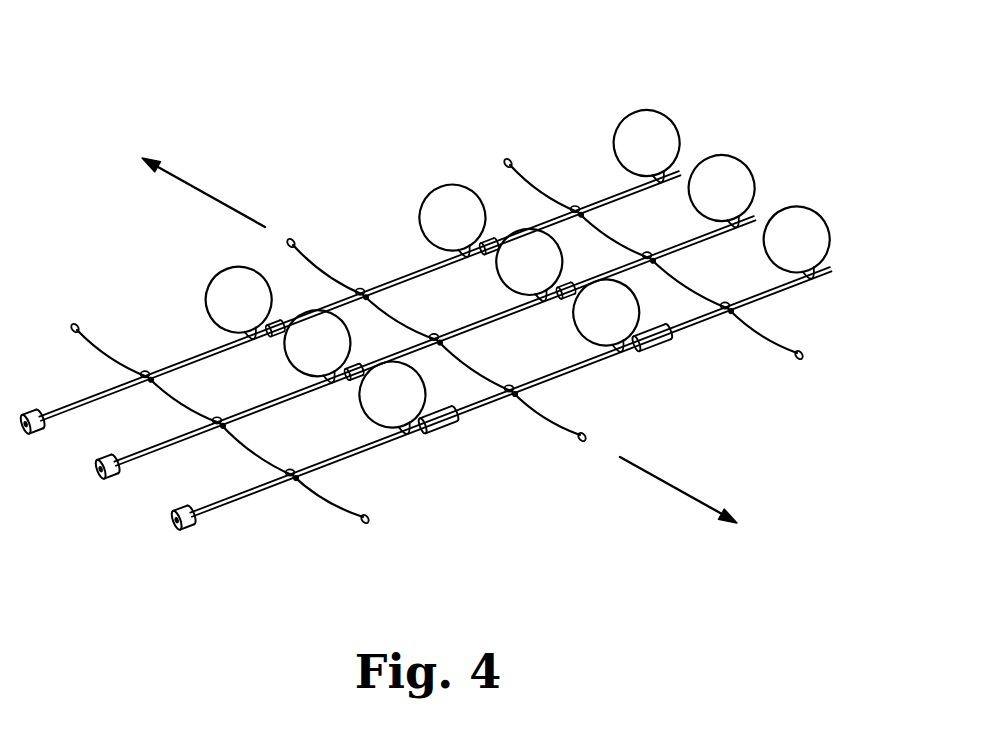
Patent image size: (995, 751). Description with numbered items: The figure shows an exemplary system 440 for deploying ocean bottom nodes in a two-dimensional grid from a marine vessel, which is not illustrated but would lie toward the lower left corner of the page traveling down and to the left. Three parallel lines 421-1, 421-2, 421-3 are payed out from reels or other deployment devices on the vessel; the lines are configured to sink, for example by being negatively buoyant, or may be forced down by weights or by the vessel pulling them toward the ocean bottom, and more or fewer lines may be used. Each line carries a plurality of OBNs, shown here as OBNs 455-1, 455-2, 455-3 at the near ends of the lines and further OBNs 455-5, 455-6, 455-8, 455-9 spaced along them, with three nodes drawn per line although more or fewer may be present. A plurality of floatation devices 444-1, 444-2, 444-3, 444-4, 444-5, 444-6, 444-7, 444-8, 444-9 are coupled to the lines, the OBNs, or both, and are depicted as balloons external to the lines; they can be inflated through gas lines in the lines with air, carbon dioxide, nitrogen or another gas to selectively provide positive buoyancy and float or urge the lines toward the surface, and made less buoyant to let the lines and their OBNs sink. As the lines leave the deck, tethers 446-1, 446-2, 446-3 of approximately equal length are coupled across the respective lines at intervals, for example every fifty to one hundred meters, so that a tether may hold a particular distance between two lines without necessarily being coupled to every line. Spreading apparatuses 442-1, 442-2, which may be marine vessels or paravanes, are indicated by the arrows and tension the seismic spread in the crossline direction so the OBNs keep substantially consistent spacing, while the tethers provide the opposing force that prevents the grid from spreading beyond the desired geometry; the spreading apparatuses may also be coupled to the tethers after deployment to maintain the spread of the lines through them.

The system 440 is at (539, 91).
The spreading apparatus 442-1 is at (220, 200).
The spreading apparatus 442-2 is at (672, 486).
The line 421-1 is at (197, 356).
The line 421-2 is at (272, 406).
The line 421-3 is at (330, 466).
The floatation device 444-1 is at (208, 303).
The floatation device 444-2 is at (290, 359).
The floatation device 444-3 is at (364, 411).
The floatation device 444-4 is at (421, 231).
The floatation device 444-5 is at (498, 280).
The floatation device 444-6 is at (576, 329).
The floatation device 444-7 is at (670, 119).
The floatation device 444-8 is at (745, 167).
The floatation device 444-9 is at (822, 220).
The OBN 455-1 is at (20, 413).
The OBN 455-2 is at (93, 460).
The OBN 455-3 is at (169, 509).
The OBN 455-5 is at (354, 371).
The OBN 455-6 is at (566, 289).
The OBN 455-8 is at (440, 411).
The OBN 455-9 is at (654, 331).
The tether 446-1 is at (334, 508).
The tether 446-2 is at (560, 429).
The tether 446-3 is at (777, 349).